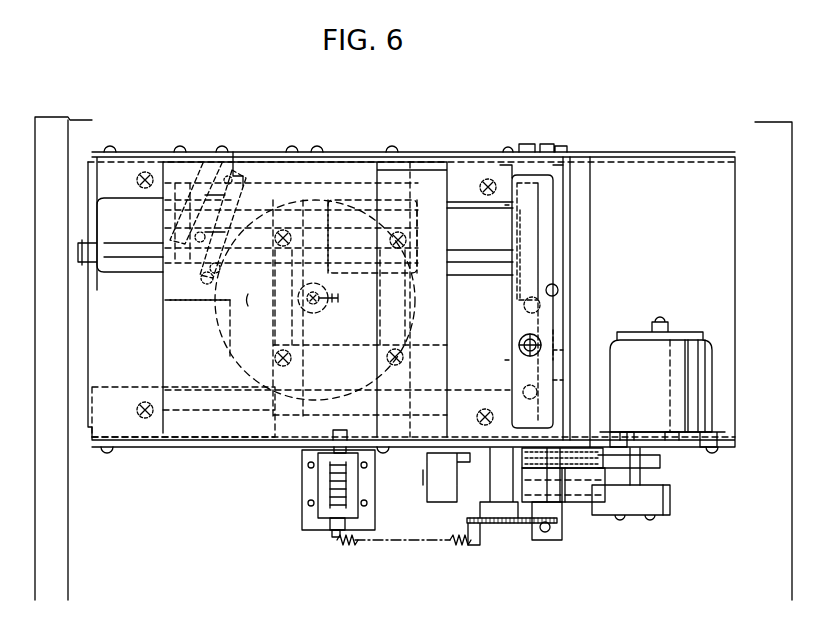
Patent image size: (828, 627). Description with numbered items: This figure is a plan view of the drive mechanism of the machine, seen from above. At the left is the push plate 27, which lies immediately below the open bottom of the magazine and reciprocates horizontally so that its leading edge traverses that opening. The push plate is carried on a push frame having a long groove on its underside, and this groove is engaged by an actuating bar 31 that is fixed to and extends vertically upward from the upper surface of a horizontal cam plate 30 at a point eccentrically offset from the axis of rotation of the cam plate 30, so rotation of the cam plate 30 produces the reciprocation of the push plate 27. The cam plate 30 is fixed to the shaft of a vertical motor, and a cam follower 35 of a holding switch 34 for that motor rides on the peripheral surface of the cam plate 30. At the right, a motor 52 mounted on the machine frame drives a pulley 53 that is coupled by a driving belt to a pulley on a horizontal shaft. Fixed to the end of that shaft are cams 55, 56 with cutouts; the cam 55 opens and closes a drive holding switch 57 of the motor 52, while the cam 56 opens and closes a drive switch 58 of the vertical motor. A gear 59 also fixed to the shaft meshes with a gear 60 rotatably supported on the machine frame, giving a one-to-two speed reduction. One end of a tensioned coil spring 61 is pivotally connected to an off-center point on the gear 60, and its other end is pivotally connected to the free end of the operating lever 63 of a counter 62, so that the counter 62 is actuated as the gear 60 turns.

The push plate 27 is at (195, 425).
The cam plate 30 is at (222, 316).
The actuating bar 31 is at (283, 392).
The holding switch 34 is at (235, 176).
The cam follower 35 is at (215, 276).
The motor 52 is at (677, 352).
The pulley 53 is at (660, 463).
The cam 55 is at (565, 502).
The cam 56 is at (580, 500).
The drive holding switch 57 is at (663, 508).
The drive switch 58 is at (588, 485).
The gear 59 is at (562, 542).
The gear 60 is at (498, 523).
The tensioned coil spring 61 is at (383, 542).
The counter 62 is at (323, 490).
The operating lever 63 is at (334, 538).